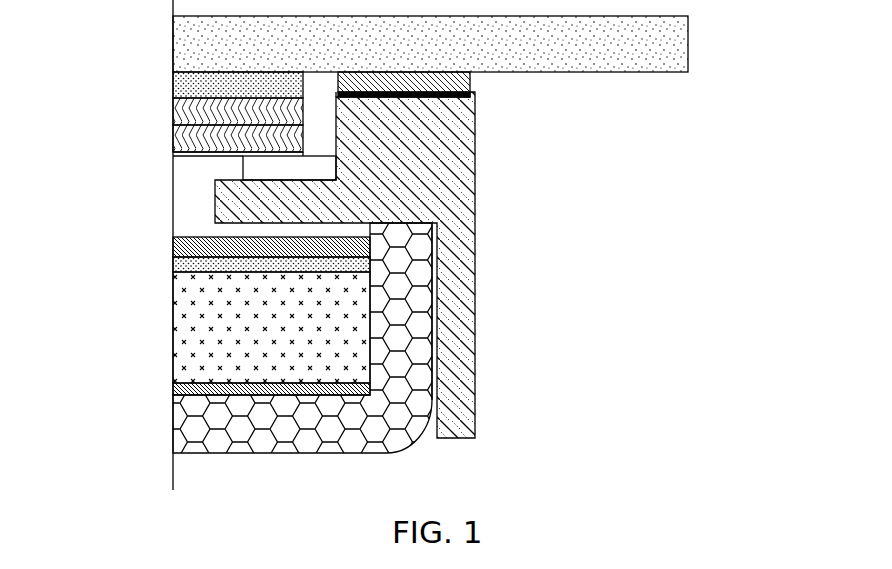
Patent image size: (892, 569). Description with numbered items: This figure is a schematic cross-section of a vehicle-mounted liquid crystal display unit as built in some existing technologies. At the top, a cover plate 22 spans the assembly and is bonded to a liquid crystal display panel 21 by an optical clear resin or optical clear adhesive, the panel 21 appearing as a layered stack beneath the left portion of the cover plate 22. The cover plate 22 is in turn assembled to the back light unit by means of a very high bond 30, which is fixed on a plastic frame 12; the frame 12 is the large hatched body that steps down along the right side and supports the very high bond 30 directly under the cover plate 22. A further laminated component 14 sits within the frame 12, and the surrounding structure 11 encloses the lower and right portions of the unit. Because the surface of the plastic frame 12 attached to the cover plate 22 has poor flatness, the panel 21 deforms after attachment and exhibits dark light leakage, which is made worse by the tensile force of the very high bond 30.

The housing / frame body with foam structure 11 is at (420, 368).
The plastic frame 12 is at (450, 223).
The display module 14 is at (230, 326).
The liquid crystal display panel 21 is at (185, 122).
The cover plate 22 is at (678, 42).
The very high bond 30 is at (470, 82).